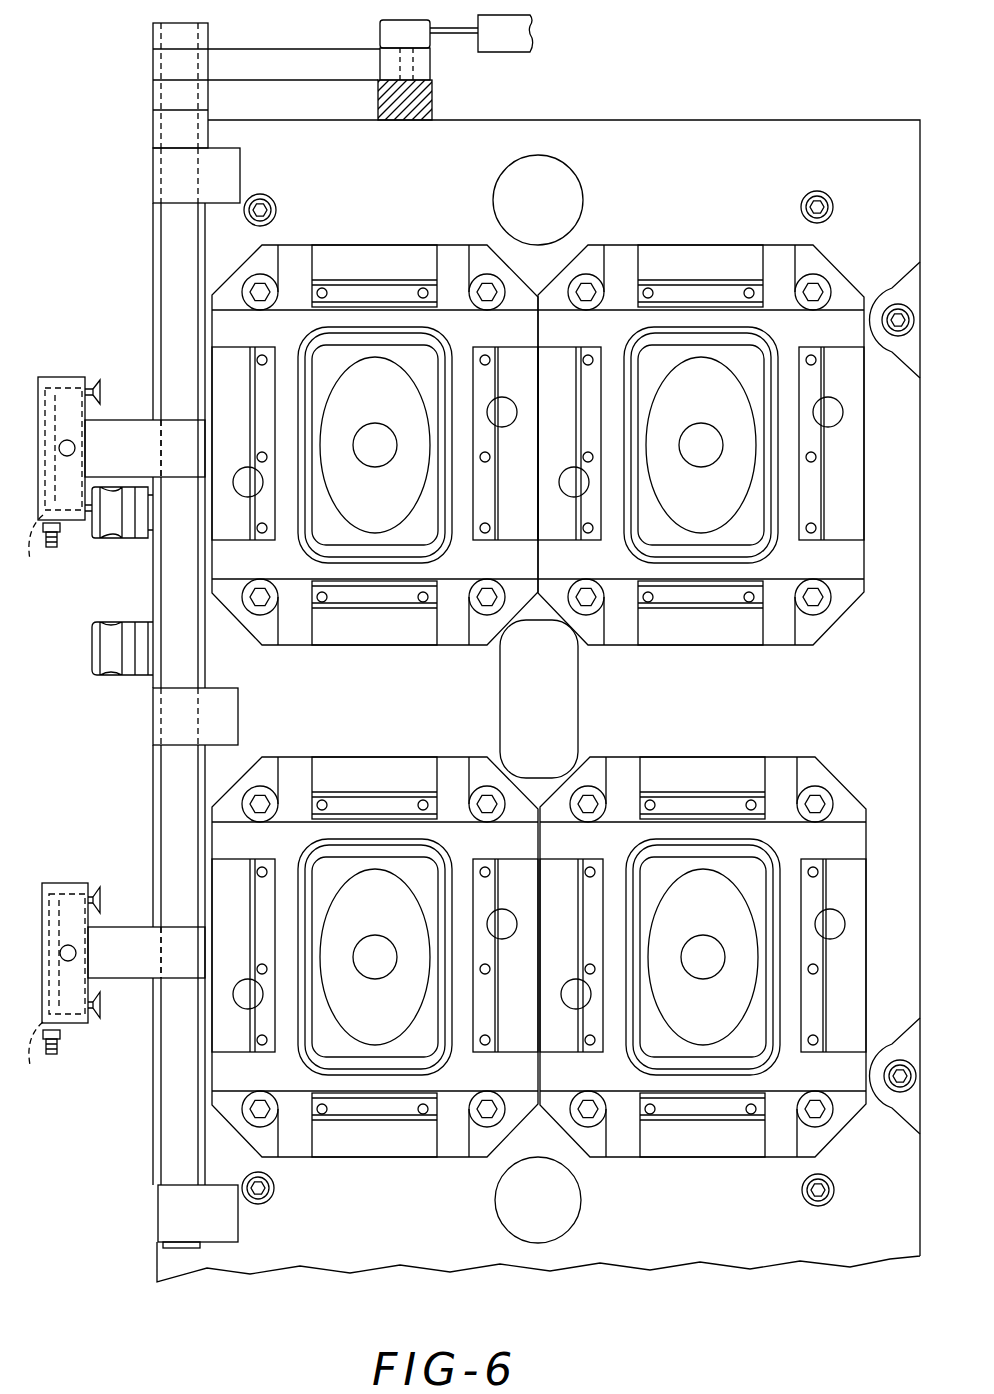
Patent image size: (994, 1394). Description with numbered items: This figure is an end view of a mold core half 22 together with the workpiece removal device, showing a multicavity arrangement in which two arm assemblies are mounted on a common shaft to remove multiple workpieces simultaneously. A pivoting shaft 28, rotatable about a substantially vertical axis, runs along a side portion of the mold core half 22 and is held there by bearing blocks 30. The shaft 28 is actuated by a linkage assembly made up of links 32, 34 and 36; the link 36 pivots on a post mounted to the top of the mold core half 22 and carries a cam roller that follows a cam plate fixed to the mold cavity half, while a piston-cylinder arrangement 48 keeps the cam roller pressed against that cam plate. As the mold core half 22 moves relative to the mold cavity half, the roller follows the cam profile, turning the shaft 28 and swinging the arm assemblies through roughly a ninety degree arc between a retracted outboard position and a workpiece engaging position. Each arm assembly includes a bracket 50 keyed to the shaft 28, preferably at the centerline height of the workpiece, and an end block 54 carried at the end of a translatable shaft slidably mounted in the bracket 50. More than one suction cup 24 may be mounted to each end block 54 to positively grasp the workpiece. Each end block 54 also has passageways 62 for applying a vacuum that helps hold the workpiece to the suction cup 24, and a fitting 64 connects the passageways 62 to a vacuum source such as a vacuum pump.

The mold core half 22 is at (683, 147).
The suction cup 24 is at (102, 1010).
The pivoting shaft 28 is at (190, 641).
The bearing blocks 30 is at (178, 1219).
The link 32 is at (196, 38).
The link 34 is at (302, 57).
The link 36 is at (433, 97).
The piston-cylinder arrangement 48 is at (532, 35).
The bracket 50 is at (148, 459).
The end block 54 is at (62, 885).
The passageways 62 is at (36, 802).
The fitting 64 is at (55, 1055).